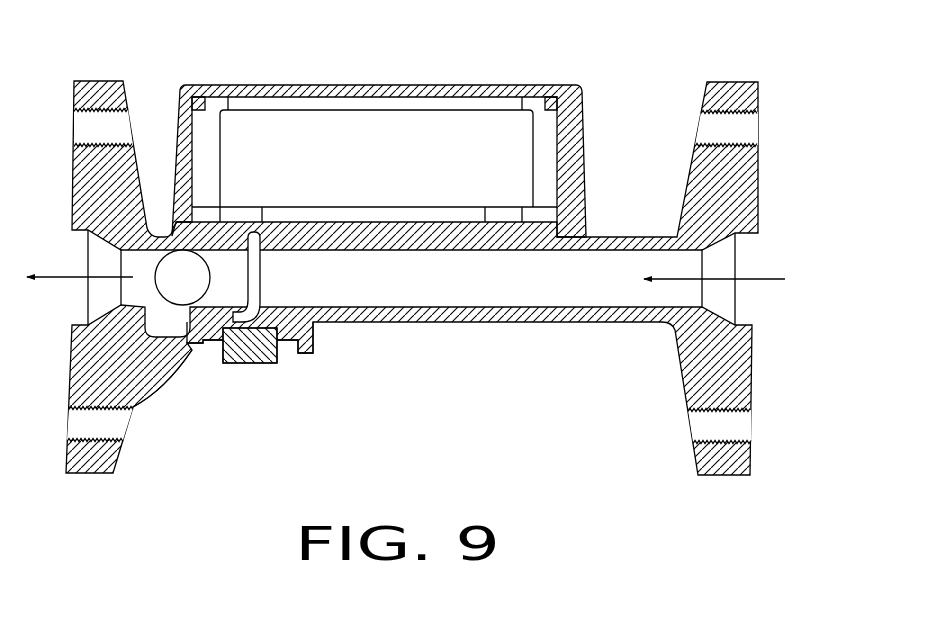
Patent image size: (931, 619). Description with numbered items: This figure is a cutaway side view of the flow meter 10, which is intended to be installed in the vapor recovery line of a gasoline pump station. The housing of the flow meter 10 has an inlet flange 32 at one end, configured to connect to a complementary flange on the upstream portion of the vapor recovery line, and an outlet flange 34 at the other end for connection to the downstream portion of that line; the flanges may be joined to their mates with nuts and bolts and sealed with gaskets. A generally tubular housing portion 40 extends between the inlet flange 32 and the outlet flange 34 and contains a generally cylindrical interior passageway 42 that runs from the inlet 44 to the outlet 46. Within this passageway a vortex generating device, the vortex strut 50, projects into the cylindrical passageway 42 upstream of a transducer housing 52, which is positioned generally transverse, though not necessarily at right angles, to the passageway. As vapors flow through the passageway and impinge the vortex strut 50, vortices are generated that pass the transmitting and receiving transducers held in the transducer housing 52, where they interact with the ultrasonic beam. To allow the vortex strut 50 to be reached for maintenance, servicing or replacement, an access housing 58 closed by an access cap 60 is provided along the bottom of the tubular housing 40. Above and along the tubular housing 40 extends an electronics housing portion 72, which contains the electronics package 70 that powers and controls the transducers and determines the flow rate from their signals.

The flow meter 10 is at (429, 71).
The inlet flange 32 is at (763, 163).
The outlet flange 34 is at (71, 165).
The tubular housing portion 40 is at (630, 324).
The cylindrical interior passageway 42 is at (739, 262).
The inlet 44 is at (753, 298).
The outlet 46 is at (65, 253).
The vortex strut 50 is at (132, 408).
The transducer housing 52 is at (172, 283).
The access housing 58 is at (326, 348).
The access cap 60 is at (256, 368).
The electronics package 70 is at (247, 188).
The electronics housing portion 72 is at (336, 82).